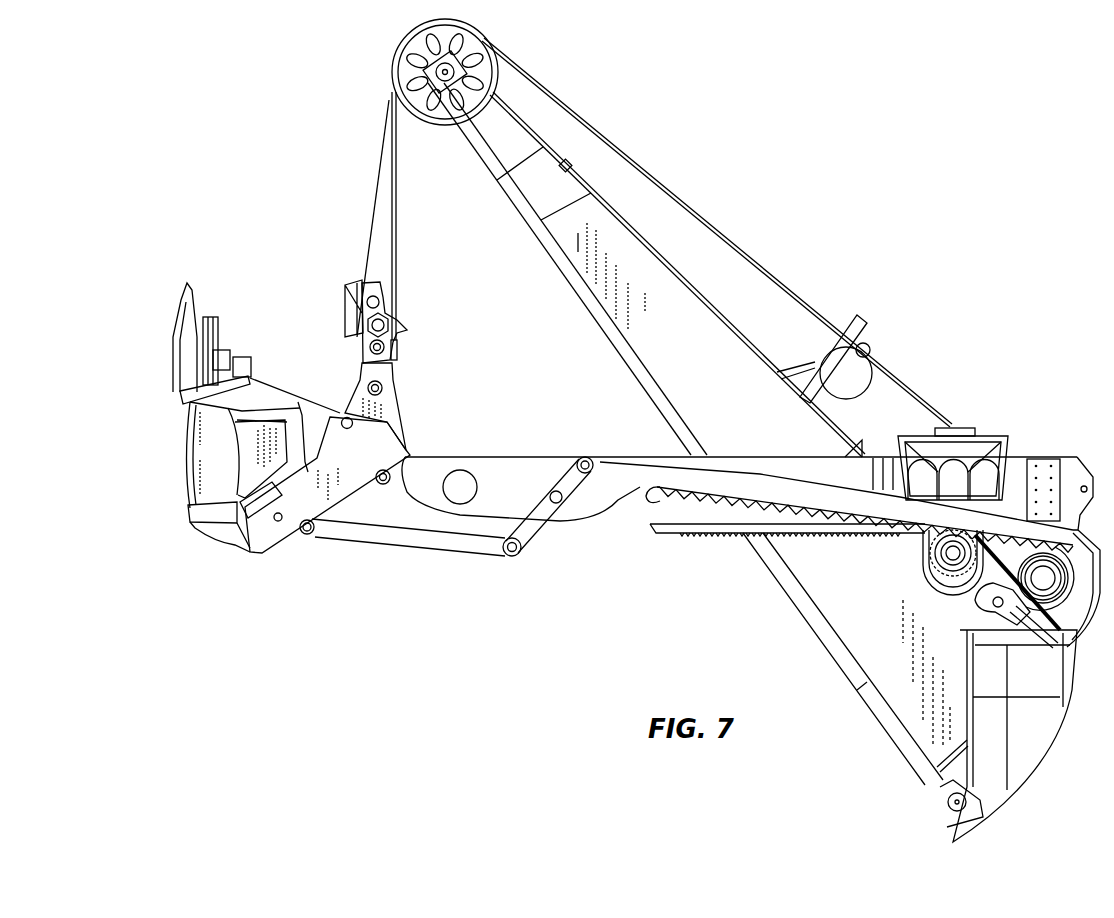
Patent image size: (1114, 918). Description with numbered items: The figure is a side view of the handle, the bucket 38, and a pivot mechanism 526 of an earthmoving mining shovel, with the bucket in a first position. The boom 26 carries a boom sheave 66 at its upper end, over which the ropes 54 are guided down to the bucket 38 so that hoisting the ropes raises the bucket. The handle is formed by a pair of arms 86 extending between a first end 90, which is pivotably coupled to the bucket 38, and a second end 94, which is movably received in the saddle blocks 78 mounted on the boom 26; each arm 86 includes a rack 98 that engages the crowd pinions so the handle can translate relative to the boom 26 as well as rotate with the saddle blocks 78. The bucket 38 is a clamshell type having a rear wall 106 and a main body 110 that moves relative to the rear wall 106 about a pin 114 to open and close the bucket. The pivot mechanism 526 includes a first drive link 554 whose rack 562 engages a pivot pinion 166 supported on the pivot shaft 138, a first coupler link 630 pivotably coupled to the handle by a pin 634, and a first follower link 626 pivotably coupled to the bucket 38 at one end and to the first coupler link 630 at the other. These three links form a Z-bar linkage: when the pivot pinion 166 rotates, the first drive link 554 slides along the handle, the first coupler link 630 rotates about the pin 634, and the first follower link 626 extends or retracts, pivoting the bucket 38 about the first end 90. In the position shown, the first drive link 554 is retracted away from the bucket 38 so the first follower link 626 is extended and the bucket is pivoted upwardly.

The boom 26 is at (664, 216).
The bucket 38 is at (185, 545).
The ropes 54 is at (742, 250).
The boom sheave 66 is at (418, 40).
The saddle blocks 78 is at (990, 450).
The arms 86 is at (500, 470).
The first end 90 is at (406, 455).
The second end 94 is at (1080, 462).
The rack 98 is at (717, 535).
The rear wall 106 is at (251, 537).
The main body 110 is at (200, 455).
The pin 114 is at (345, 418).
The pivot shaft 138 is at (930, 550).
The pivot pinion 166 is at (943, 574).
The pivot mechanism 526 is at (549, 468).
The first drive link 554 is at (742, 490).
The rack 562 is at (627, 477).
The first follower link 626 is at (408, 540).
The first coupler link 630 is at (520, 556).
The pin 634 is at (563, 507).